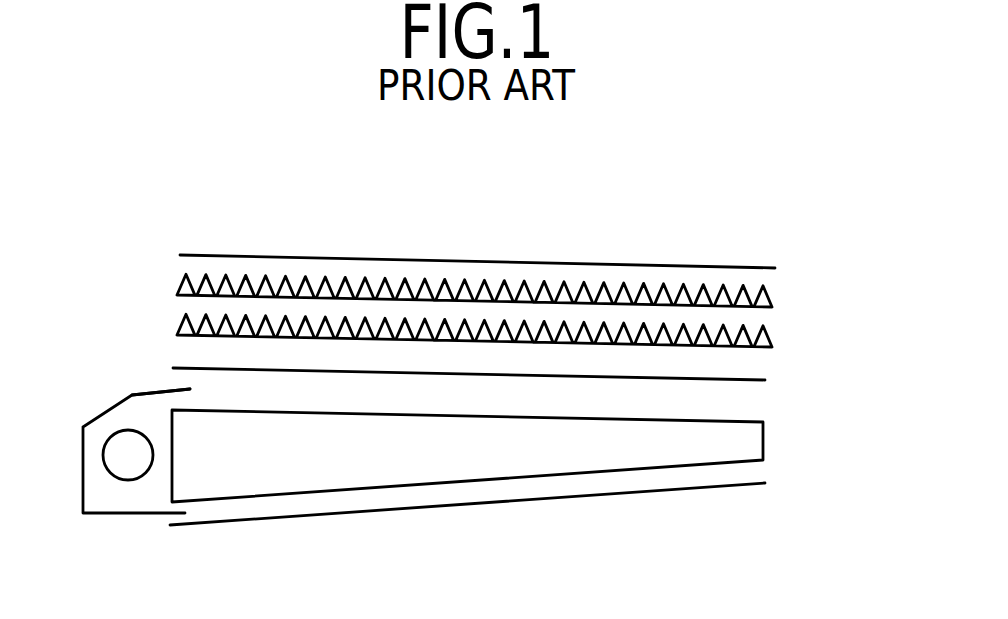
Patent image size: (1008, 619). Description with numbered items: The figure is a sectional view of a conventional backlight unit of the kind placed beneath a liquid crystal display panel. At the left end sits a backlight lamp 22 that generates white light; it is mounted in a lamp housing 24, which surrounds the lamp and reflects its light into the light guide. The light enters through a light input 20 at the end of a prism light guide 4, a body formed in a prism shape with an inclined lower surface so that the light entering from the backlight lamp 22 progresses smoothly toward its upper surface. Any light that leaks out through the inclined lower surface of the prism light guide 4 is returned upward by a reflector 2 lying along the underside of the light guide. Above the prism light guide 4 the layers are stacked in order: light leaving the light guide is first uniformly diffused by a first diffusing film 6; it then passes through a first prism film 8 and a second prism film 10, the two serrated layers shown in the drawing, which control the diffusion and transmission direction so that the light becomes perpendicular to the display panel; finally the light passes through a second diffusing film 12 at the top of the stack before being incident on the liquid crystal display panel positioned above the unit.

The reflector 2 is at (752, 486).
The prism light guide 4 is at (763, 432).
The first diffusing film 6 is at (765, 380).
The first prism film 8 is at (772, 338).
The second prism film 10 is at (772, 305).
The second diffusing film 12 is at (775, 268).
The light input 20 is at (80, 540).
The backlight lamp 22 is at (120, 430).
The lamp housing 24 is at (157, 392).